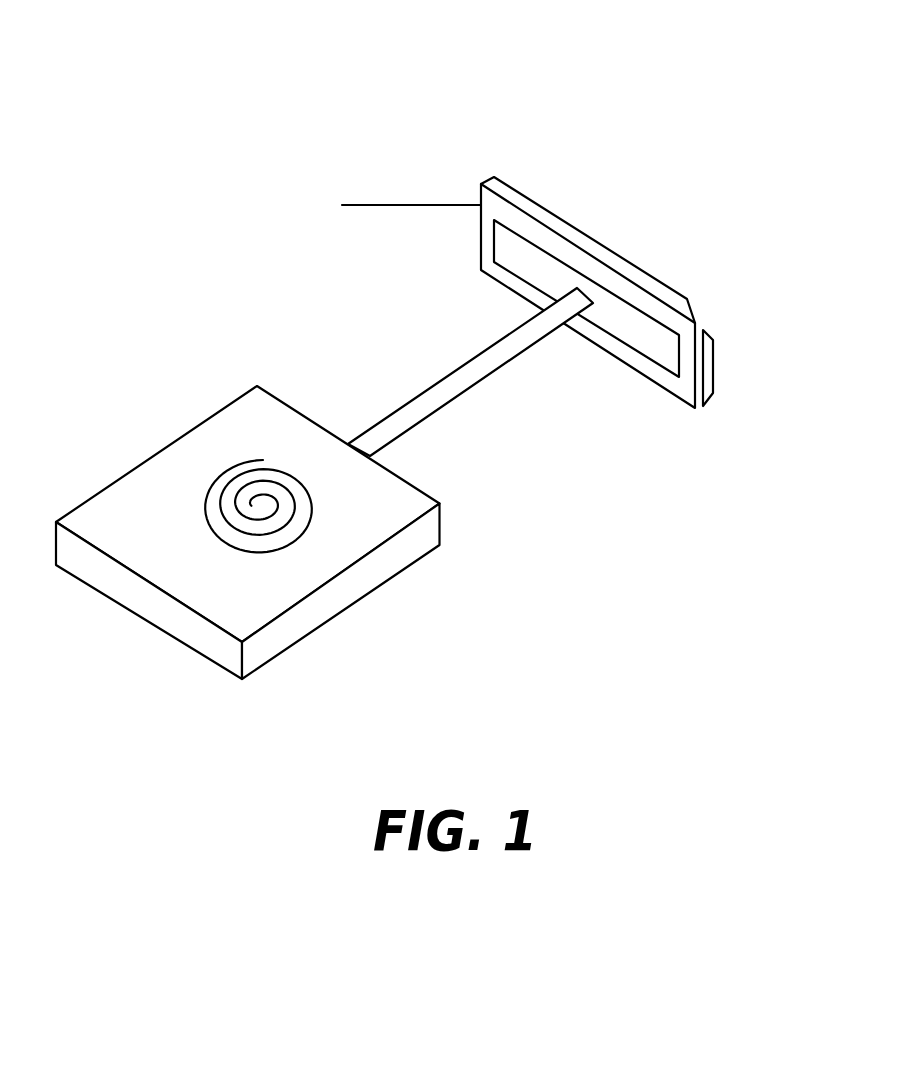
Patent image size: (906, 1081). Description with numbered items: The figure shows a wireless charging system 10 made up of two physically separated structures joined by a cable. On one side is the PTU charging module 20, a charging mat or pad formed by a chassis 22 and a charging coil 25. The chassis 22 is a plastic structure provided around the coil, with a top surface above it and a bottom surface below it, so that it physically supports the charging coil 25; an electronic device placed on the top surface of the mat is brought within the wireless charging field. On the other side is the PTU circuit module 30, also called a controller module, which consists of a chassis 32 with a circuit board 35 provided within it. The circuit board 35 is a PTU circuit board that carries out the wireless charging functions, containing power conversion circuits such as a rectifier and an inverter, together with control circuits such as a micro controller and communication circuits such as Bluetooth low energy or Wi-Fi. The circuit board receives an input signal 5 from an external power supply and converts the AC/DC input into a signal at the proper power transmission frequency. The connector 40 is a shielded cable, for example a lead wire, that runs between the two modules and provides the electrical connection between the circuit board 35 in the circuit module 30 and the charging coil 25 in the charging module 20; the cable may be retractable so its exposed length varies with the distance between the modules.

The wireless charging system 10 is at (411, 340).
The input signal 5 is at (383, 205).
The PTU charging module 20 is at (208, 438).
The chassis 22 is at (440, 527).
The charging coil 25 is at (295, 537).
The PTU circuit module 30 is at (588, 234).
The chassis 32 is at (714, 365).
The circuit board 35 is at (657, 363).
The connector 40 is at (468, 389).